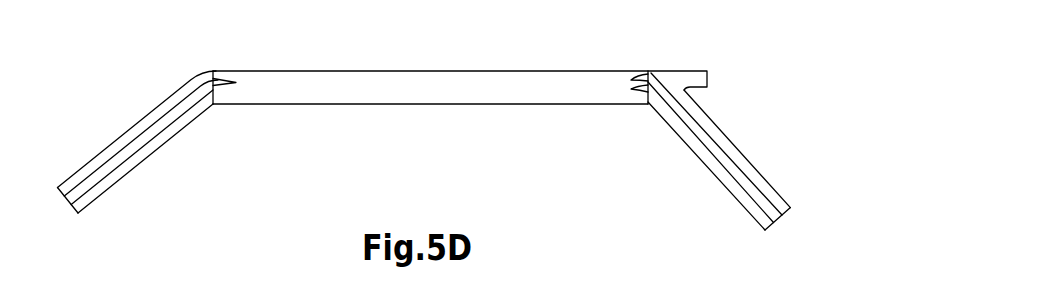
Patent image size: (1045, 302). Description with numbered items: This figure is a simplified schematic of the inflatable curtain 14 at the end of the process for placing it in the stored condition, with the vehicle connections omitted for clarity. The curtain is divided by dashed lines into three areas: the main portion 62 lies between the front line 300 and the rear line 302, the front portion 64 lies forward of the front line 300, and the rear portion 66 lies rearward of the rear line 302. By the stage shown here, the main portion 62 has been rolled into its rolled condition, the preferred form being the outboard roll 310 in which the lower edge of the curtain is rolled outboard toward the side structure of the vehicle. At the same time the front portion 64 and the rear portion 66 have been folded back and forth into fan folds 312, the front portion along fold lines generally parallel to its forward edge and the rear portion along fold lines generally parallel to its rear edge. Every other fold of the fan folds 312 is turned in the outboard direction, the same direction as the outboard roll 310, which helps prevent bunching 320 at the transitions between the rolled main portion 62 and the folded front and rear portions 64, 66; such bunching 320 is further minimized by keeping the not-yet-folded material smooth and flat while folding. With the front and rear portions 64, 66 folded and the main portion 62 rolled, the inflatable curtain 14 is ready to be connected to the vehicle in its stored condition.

The inflatable curtain 14 is at (401, 55).
The main portion 62 is at (492, 92).
The front portion 64 is at (143, 117).
The rear portion 66 is at (728, 137).
The front line 300 is at (214, 80).
The rear line 302 is at (648, 78).
The outboard roll 310 is at (462, 118).
The fan folds 312 is at (165, 158).
The bunching 320 is at (219, 116).